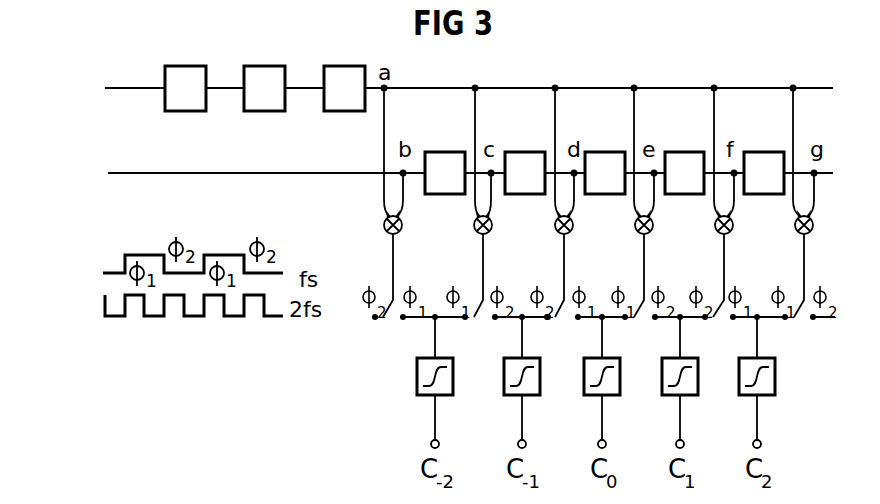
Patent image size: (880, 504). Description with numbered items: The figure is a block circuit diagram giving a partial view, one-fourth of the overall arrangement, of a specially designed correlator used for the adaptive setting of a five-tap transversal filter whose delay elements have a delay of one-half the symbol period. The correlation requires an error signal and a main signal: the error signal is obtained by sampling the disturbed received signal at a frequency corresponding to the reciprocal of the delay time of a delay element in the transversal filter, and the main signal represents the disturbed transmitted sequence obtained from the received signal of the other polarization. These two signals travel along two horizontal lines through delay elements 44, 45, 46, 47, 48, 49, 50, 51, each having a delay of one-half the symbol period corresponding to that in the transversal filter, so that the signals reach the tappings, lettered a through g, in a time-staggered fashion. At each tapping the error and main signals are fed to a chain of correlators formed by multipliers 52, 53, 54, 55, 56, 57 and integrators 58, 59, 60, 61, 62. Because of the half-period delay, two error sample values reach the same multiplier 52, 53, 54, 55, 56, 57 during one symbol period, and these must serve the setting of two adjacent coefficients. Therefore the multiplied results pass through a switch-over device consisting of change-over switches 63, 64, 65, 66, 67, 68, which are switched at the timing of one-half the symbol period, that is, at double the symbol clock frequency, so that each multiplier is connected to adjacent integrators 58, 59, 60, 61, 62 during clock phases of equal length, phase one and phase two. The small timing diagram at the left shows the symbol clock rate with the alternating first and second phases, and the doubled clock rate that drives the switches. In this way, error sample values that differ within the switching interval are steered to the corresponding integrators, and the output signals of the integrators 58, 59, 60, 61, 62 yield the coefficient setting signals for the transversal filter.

The delay element 44 is at (187, 74).
The delay element 45 is at (264, 74).
The delay element 46 is at (344, 74).
The delay element 47 is at (445, 156).
The delay element 48 is at (525, 156).
The delay element 49 is at (605, 156).
The delay element 50 is at (684, 156).
The delay element 51 is at (764, 156).
The multiplier 52 is at (408, 226).
The multiplier 53 is at (498, 226).
The multiplier 54 is at (579, 226).
The multiplier 55 is at (660, 226).
The multiplier 56 is at (738, 226).
The multiplier 57 is at (819, 226).
The integrator 58 is at (418, 403).
The integrator 59 is at (508, 403).
The integrator 60 is at (589, 403).
The integrator 61 is at (667, 403).
The integrator 62 is at (744, 403).
The change-over switch 63 is at (420, 296).
The change-over switch 64 is at (512, 296).
The change-over switch 65 is at (586, 296).
The change-over switch 66 is at (671, 296).
The change-over switch 67 is at (749, 296).
The change-over switch 68 is at (811, 292).